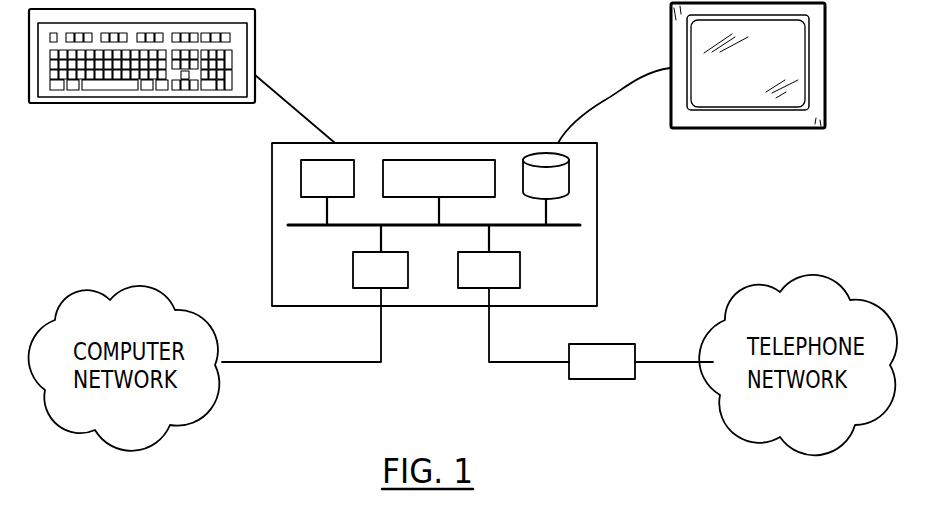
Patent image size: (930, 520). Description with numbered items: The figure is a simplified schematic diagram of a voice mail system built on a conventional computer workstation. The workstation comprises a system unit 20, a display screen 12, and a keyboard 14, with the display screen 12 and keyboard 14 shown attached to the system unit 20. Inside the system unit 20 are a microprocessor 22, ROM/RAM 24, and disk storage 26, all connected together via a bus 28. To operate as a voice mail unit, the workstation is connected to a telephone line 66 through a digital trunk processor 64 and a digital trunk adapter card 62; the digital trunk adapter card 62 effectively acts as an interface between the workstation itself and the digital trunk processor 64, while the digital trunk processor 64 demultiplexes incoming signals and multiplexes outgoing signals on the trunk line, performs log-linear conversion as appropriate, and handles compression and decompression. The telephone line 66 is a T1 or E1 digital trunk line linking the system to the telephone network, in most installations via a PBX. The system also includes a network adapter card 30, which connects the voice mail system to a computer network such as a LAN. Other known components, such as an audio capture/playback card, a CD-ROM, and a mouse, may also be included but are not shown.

The display screen 12 is at (670, 32).
The keyboard 14 is at (140, 103).
The system unit 20 is at (598, 218).
The microprocessor 22 is at (345, 160).
The ROM/RAM 24 is at (435, 160).
The disk storage 26 is at (540, 153).
The bus 28 is at (297, 226).
The network adapter card 30 is at (364, 290).
The digital trunk adapter card 62 is at (471, 290).
The digital trunk processor 64 is at (601, 380).
The telephone line 66 is at (683, 365).